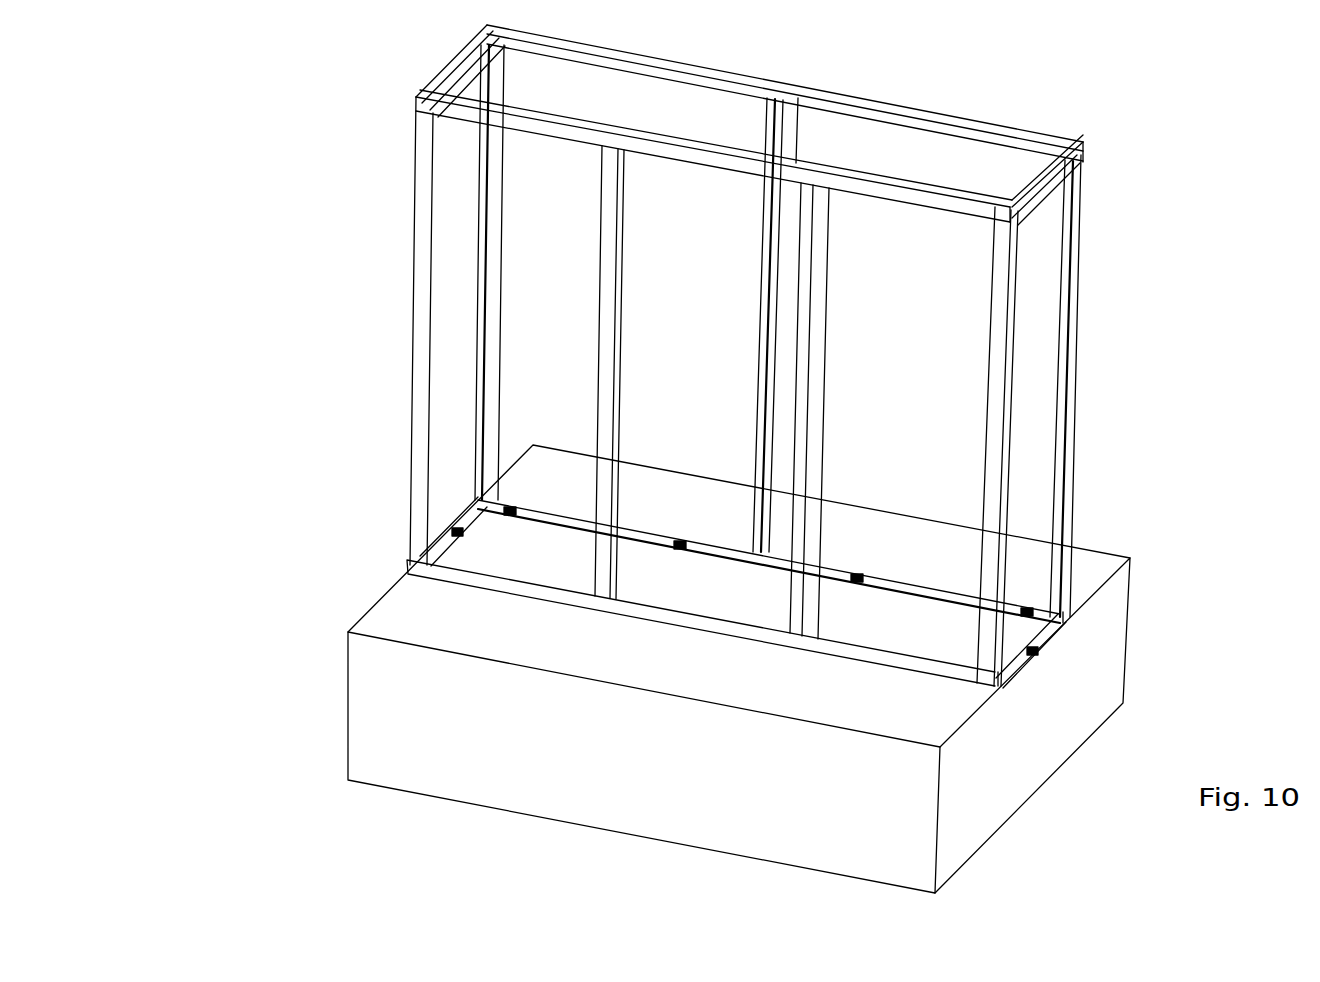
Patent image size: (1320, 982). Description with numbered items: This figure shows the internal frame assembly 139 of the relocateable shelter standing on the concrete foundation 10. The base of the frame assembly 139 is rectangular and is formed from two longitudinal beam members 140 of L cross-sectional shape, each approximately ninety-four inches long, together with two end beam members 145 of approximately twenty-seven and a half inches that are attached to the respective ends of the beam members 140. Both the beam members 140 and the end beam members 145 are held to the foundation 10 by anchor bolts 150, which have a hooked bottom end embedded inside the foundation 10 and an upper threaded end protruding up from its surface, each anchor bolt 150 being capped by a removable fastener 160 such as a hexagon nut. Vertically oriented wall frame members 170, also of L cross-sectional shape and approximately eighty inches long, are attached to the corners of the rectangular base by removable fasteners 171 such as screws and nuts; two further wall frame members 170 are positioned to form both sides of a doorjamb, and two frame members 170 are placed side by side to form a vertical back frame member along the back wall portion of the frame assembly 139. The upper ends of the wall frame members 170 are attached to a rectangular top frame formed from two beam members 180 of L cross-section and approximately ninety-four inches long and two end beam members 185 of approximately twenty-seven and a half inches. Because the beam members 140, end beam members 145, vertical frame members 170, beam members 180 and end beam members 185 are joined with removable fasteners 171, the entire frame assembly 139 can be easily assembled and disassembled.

The concrete foundation 10 is at (1107, 650).
The frame assembly 139 is at (248, 215).
The beam member 140 is at (542, 503).
The end beam member 145 is at (457, 532).
The anchor bolt 150 is at (512, 512).
The removable fastener 160 is at (512, 508).
The wall frame member 170 is at (418, 287).
The removable fastener 171 is at (1023, 212).
The beam member 180 is at (495, 125).
The end beam member 185 is at (458, 63).